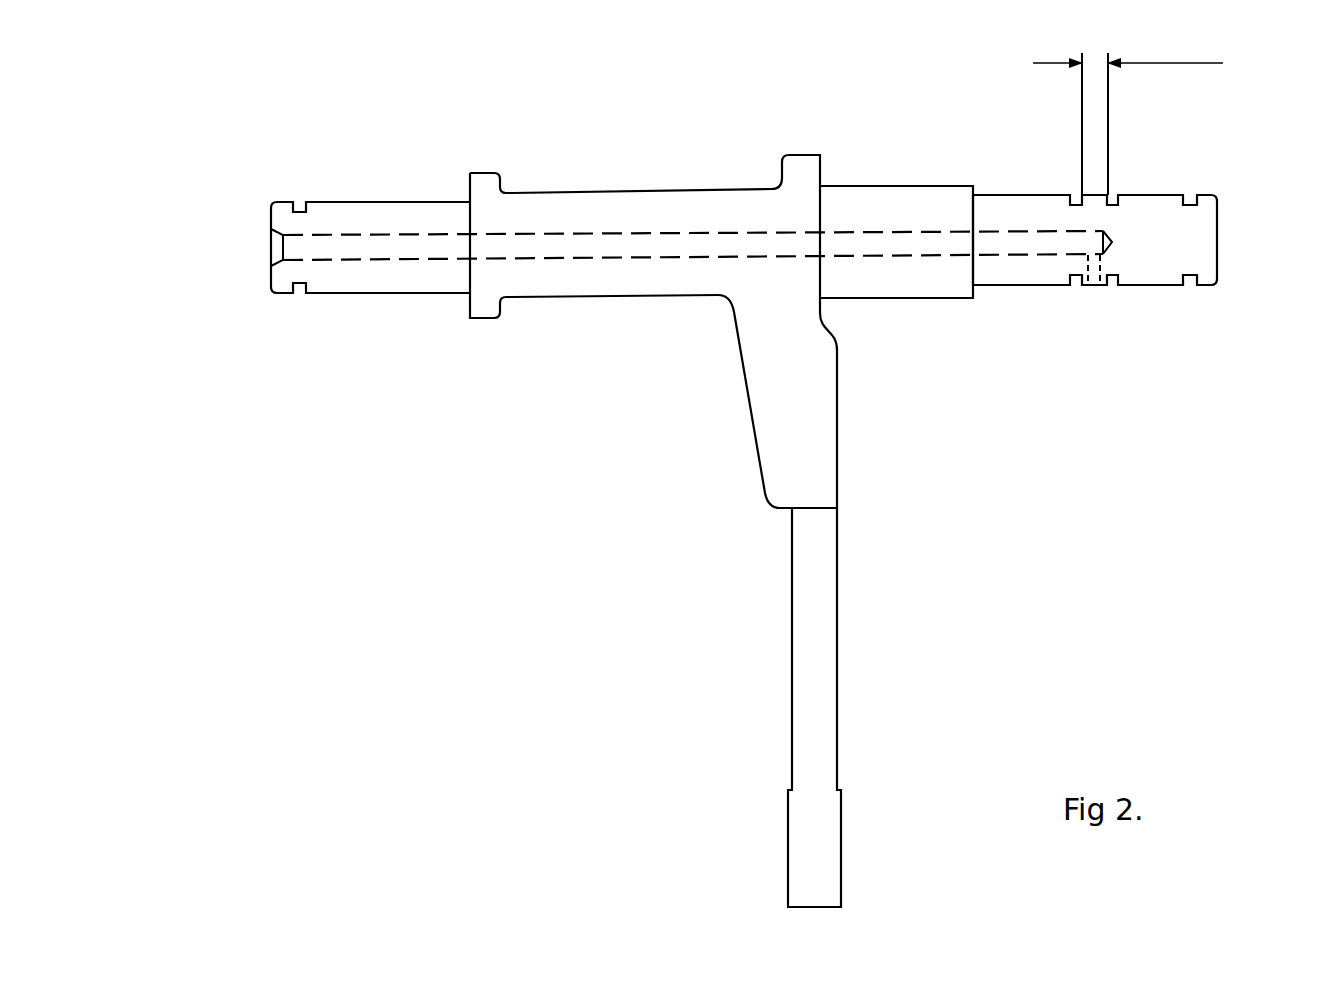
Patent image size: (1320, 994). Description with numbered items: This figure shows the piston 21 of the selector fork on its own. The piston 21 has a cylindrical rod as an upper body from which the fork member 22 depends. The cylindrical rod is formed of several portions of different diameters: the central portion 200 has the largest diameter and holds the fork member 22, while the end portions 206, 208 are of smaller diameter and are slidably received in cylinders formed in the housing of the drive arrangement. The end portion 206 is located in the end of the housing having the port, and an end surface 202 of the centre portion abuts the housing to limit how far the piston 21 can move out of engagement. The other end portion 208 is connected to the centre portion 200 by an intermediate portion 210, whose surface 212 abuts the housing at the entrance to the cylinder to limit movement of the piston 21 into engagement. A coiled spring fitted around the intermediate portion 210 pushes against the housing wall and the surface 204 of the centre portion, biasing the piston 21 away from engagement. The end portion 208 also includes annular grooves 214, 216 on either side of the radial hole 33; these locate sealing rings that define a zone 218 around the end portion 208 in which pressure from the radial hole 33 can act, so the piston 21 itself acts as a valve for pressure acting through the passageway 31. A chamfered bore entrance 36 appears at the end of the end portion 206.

The piston 21 is at (573, 177).
The fork member 22 is at (793, 480).
The passageway 31 is at (667, 245).
The radial hole 33 is at (1093, 285).
The bore entrance chamfer 36 is at (285, 252).
The central portion 200 is at (605, 280).
The end surface 202 is at (468, 303).
The surface 204 is at (822, 170).
The end portion 206 is at (350, 277).
The end portion 208 is at (1153, 222).
The intermediate portion 210 is at (910, 287).
The surface 212 is at (975, 295).
The annular groove 214 is at (1077, 195).
The annular groove 216 is at (1113, 195).
The zone 218 is at (1156, 63).